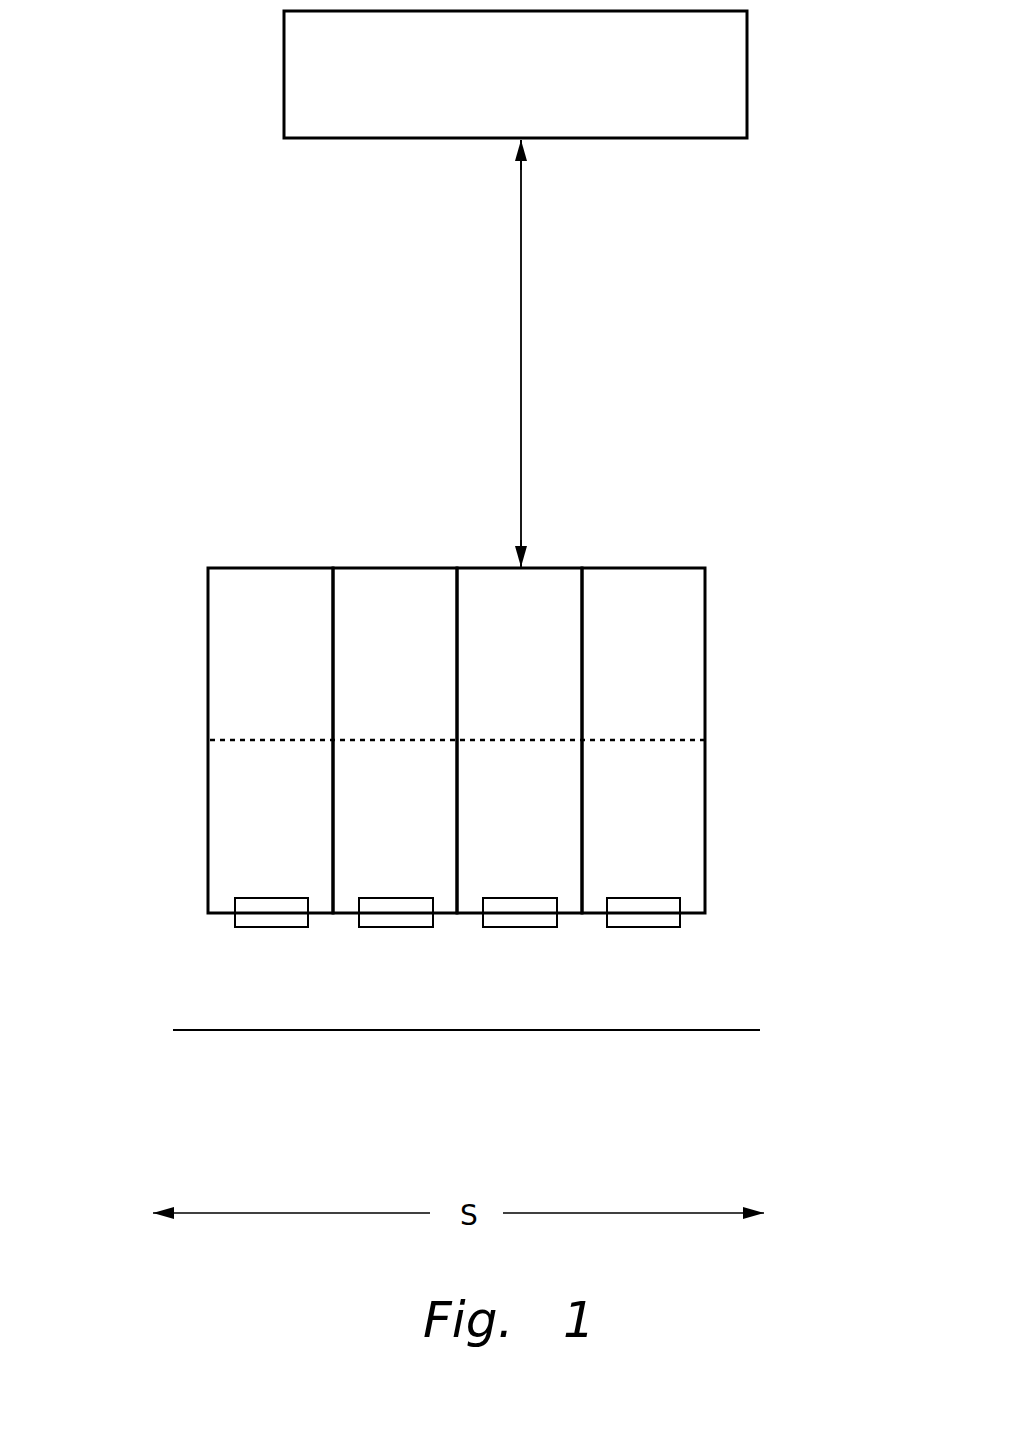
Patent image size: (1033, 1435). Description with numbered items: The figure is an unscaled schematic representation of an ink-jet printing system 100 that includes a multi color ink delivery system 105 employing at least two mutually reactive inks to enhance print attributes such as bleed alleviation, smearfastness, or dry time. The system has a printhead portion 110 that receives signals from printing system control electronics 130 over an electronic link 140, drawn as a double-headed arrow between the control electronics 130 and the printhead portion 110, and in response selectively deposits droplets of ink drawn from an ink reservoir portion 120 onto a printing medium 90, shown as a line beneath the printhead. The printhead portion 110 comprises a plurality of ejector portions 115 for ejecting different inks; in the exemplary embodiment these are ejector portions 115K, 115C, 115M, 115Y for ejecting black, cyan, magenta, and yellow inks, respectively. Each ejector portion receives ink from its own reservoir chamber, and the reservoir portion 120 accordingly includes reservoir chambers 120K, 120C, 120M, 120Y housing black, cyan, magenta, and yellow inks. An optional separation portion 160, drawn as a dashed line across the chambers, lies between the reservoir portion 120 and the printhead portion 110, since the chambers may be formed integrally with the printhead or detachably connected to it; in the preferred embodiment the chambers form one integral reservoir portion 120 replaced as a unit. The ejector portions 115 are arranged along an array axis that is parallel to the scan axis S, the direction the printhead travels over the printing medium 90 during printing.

The printing medium 90 is at (731, 1030).
The ink-jet printing system 100 is at (145, 224).
The multi color ink delivery system 105 is at (751, 560).
The printhead portion 110 is at (738, 805).
The ejector portions 115 is at (263, 981).
The ejector portion 115K is at (258, 929).
The ejector portion 115C is at (385, 929).
The ejector portion 115M is at (505, 929).
The ejector portion 115Y is at (648, 929).
The ink reservoir portion 120 is at (709, 666).
The reservoir chamber 120K is at (272, 622).
The reservoir chamber 120C is at (398, 607).
The reservoir chamber 120M is at (549, 595).
The reservoir chamber 120Y is at (645, 592).
The printing system control electronics 130 is at (749, 82).
The electronic link 140 is at (522, 335).
The separation portion 160 is at (252, 742).